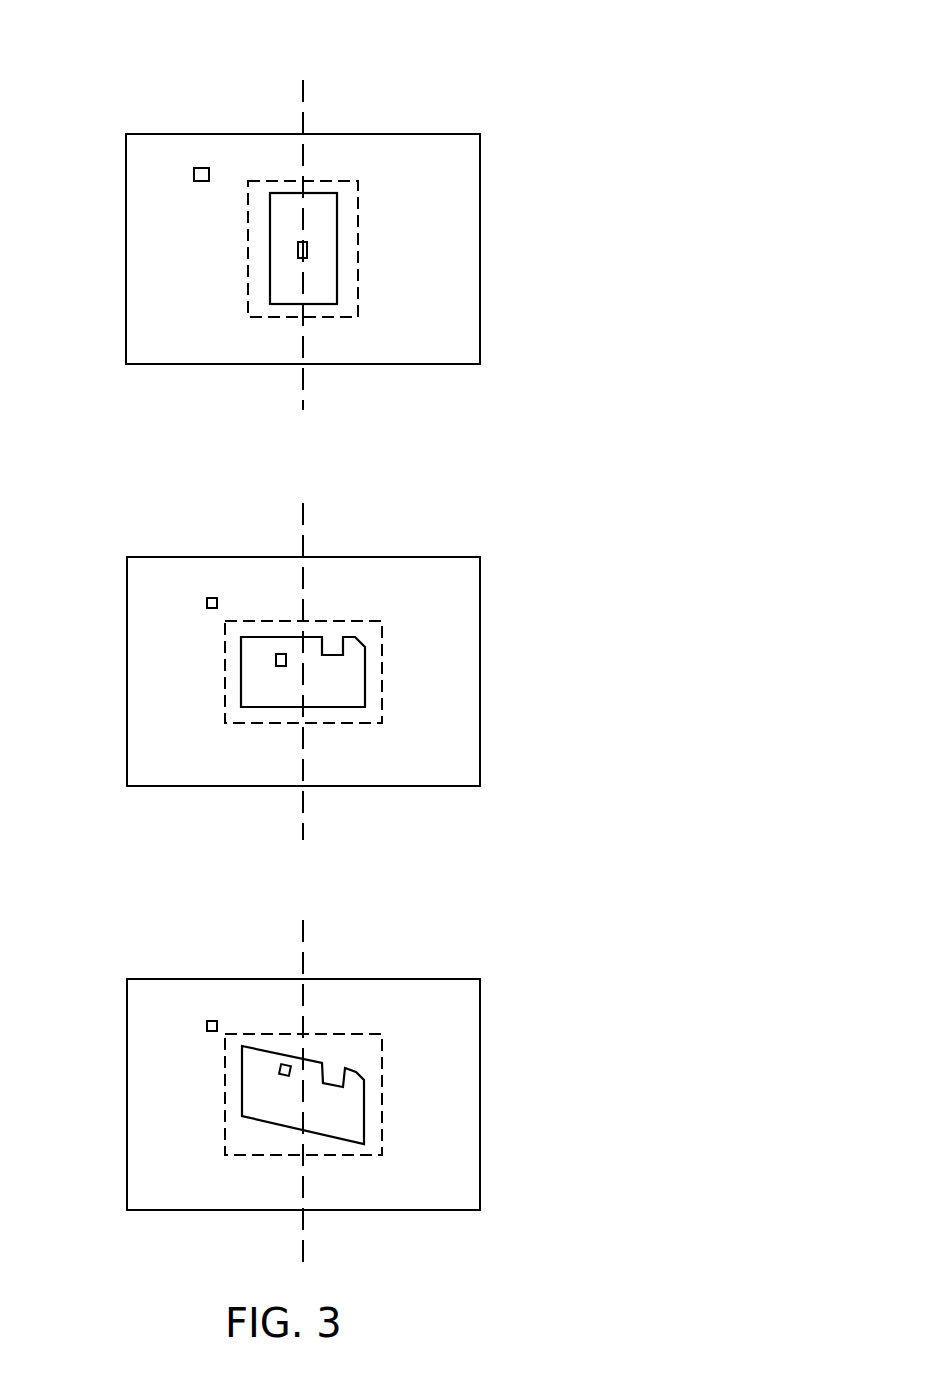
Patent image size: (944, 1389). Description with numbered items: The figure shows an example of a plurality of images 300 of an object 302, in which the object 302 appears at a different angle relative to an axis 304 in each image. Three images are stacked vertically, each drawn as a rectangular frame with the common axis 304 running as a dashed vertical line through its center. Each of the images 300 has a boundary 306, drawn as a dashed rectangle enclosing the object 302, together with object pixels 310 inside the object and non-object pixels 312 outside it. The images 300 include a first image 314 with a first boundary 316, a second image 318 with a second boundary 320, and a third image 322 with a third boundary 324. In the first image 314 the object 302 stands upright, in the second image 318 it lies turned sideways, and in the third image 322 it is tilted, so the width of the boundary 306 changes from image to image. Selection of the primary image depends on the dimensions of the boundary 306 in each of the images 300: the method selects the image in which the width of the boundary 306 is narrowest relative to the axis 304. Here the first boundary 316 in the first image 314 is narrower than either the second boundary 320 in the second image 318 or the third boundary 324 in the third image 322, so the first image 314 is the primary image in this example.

The plurality of images 300 is at (488, 60).
The object 302 is at (258, 280).
The axis 304 is at (303, 124).
The boundary 306 is at (256, 172).
The object pixels 310 is at (298, 250).
The non-object pixels 312 is at (194, 175).
The first image 314 is at (480, 248).
The first boundary 316 is at (358, 218).
The second image 318 is at (480, 672).
The second boundary 320 is at (343, 621).
The third image 322 is at (480, 1093).
The third boundary 324 is at (343, 1033).